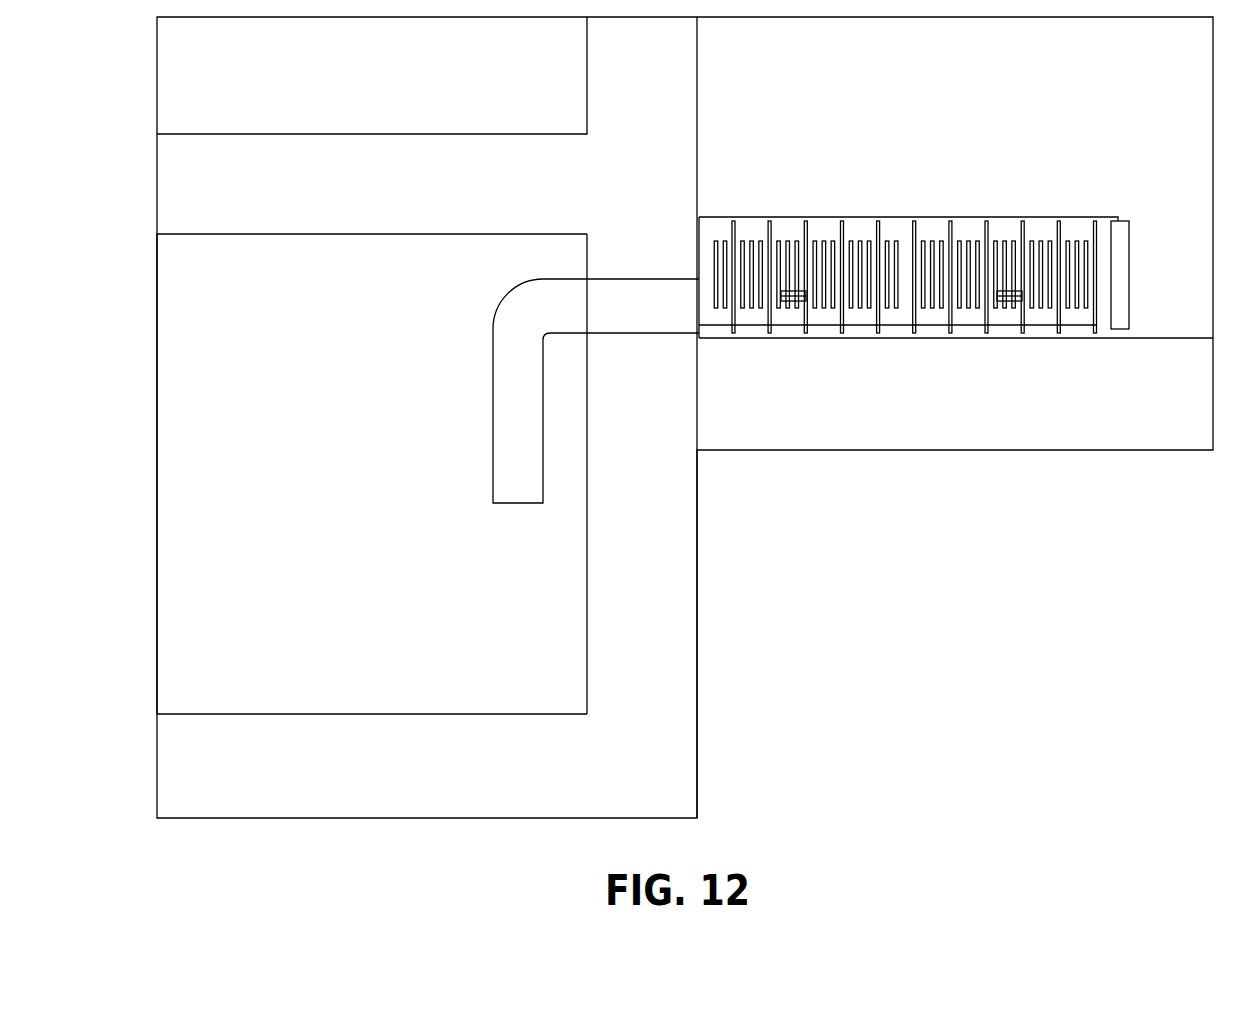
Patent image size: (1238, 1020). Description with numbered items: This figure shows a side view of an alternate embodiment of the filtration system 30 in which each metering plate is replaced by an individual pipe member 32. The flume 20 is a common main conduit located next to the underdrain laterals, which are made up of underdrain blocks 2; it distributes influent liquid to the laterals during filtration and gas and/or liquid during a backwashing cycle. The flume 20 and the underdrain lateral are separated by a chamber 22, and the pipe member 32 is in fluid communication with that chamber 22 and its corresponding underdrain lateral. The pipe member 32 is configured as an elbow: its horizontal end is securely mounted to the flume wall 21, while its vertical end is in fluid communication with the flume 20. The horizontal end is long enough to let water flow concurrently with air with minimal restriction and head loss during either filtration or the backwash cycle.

The underdrain block 2 is at (942, 237).
The flume 20 is at (283, 373).
The flume wall 21 is at (587, 260).
The chamber 22 is at (662, 322).
The filtration system 30 is at (762, 173).
The pipe member 32 is at (513, 425).